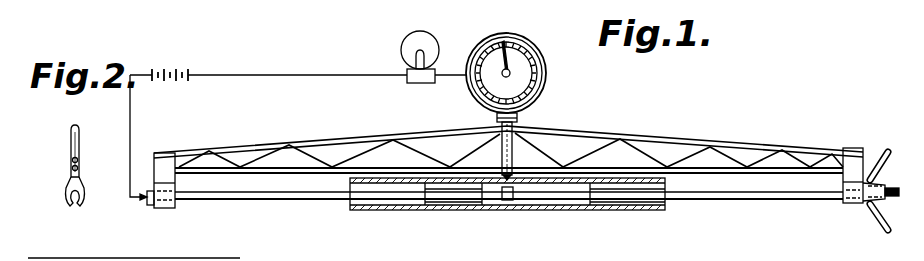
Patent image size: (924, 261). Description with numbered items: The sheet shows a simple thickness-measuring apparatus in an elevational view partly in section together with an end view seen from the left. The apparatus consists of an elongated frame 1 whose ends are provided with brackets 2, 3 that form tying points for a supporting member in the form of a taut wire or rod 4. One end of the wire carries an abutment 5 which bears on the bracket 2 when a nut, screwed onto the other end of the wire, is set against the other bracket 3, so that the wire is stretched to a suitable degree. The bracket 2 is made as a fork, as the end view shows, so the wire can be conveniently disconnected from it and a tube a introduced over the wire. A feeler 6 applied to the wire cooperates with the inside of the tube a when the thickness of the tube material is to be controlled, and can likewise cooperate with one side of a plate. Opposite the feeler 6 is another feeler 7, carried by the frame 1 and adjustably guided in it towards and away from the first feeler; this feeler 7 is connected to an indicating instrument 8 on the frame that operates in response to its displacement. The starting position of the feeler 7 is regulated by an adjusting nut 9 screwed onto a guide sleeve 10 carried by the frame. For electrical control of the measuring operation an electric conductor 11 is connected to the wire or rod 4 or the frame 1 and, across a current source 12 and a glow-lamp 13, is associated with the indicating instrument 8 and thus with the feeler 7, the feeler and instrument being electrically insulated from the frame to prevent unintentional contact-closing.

In FIG. 1, the elongated frame 1 is at (374, 140).
In FIG. 2, the elongated frame 1 is at (79, 137).
In FIG. 1, the bracket 2 is at (154, 178).
In FIG. 2, the bracket 2 is at (82, 179).
In FIG. 1, the bracket 3 is at (845, 203).
In FIG. 1, the taut wire or rod 4 is at (303, 200).
In FIG. 1, the abutment 5 is at (152, 205).
In FIG. 1, the feeler 6 is at (518, 192).
In FIG. 1, the feeler 7 is at (517, 178).
In FIG. 1, the indicating instrument 8 is at (547, 65).
In FIG. 1, the adjusting nut 9 is at (498, 120).
In FIG. 1, the guide sleeve 10 is at (506, 177).
In FIG. 1, the electric conductor 11 is at (130, 107).
In FIG. 1, the current source 12 is at (183, 87).
In FIG. 1, the glow-lamp 13 is at (446, 25).
In FIG. 1, the tube a is at (423, 207).